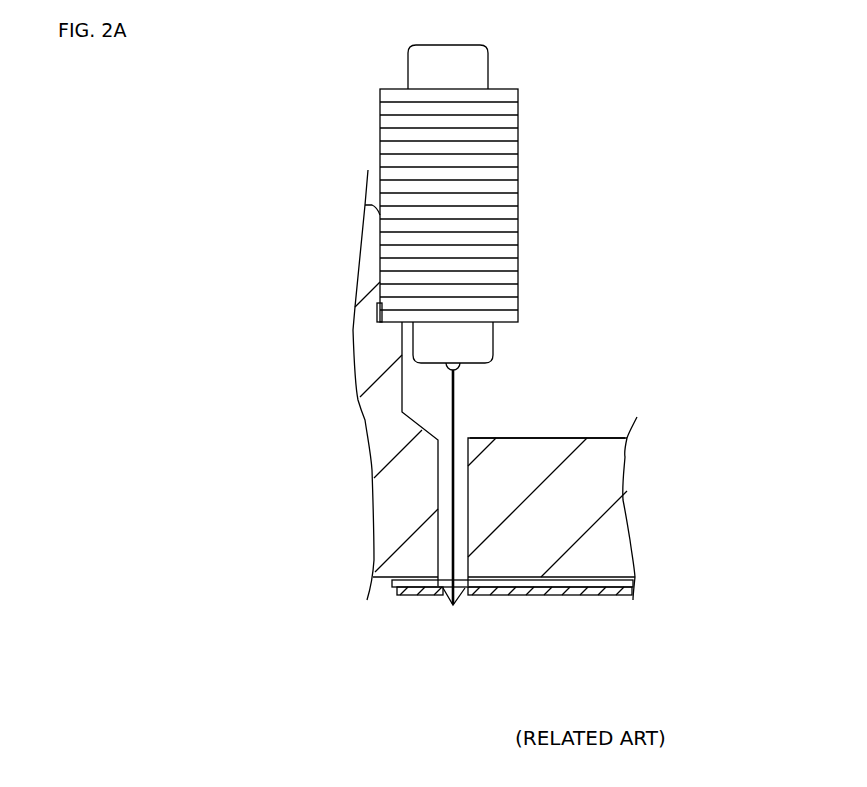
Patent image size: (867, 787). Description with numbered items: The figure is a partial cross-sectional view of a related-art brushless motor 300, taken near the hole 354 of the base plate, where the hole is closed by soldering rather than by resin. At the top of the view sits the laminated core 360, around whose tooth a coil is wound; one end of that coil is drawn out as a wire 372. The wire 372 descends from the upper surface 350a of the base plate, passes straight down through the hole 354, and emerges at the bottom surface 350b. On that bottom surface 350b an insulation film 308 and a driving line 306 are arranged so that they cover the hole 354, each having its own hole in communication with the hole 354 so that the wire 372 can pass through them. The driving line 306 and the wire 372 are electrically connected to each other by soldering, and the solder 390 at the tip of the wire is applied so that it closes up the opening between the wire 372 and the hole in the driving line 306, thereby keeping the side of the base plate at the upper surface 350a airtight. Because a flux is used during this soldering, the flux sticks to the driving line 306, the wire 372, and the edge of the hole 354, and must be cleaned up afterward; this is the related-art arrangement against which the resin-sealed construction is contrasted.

The brushless motor 300 is at (500, 748).
The driving line 306 is at (407, 597).
The insulation film 308 is at (393, 582).
The upper surface of base plate 350a is at (605, 438).
The bottom surface of base plate 350b is at (613, 597).
The hole 354 is at (462, 492).
The laminated core 360 is at (505, 250).
The wire 372 is at (455, 398).
The solder 390 is at (463, 604).